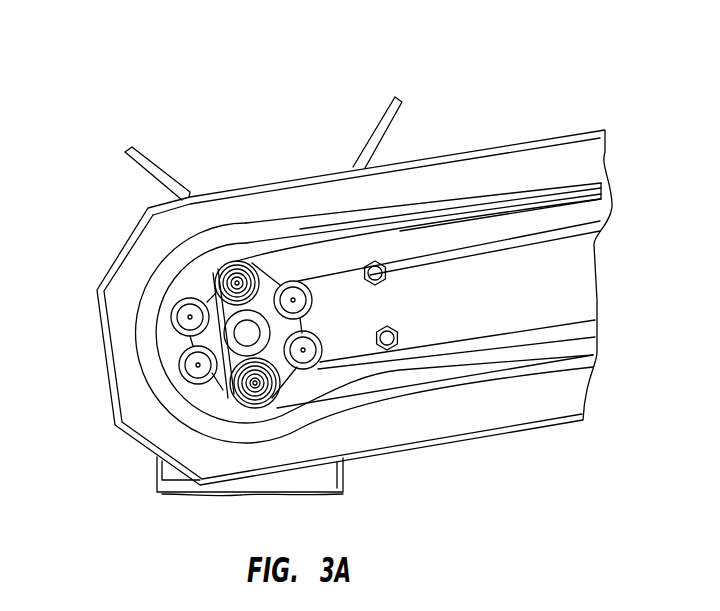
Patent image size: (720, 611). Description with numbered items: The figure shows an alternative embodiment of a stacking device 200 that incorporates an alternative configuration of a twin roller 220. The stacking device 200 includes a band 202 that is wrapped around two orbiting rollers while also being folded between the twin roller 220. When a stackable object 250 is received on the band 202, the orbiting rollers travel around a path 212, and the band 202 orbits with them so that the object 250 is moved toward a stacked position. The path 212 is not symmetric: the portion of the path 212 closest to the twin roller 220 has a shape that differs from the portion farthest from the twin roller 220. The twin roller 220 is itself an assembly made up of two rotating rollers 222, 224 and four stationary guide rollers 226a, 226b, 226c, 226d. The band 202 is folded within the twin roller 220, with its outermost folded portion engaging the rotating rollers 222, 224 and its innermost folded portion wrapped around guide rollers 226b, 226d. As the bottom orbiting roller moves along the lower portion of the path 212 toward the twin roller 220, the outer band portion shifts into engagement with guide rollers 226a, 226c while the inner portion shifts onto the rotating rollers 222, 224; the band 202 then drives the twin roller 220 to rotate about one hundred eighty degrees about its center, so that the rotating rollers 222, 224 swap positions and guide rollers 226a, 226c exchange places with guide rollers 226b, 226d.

The stacking device 200 is at (603, 103).
The band 202 is at (547, 190).
The path 212 is at (348, 220).
The twin roller 220 is at (220, 402).
The rotating roller 222 is at (215, 278).
The rotating roller 224 is at (275, 392).
The guide roller 226a is at (178, 318).
The guide roller 226b is at (312, 298).
The guide roller 226c is at (190, 372).
The guide roller 226d is at (322, 358).
The stackable object 250 is at (160, 168).